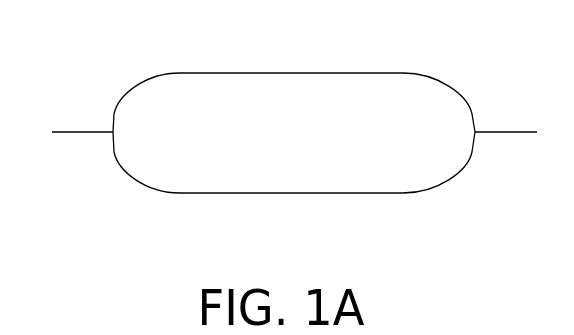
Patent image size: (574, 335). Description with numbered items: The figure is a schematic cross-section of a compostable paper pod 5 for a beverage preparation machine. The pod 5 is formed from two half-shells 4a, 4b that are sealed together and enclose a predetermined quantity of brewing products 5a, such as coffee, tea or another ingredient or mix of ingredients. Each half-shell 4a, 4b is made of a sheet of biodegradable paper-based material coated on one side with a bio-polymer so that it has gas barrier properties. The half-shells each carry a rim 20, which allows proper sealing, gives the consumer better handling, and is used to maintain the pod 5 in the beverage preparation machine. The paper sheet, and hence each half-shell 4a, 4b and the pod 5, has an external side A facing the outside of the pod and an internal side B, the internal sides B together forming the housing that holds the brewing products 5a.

The compostable paper pod 5 is at (77, 190).
The brewing products 5a is at (262, 152).
The half-shell 4a is at (403, 193).
The half-shell 4b is at (402, 72).
The rim 20 is at (510, 130).
The external side A is at (323, 72).
The internal side B is at (179, 74).